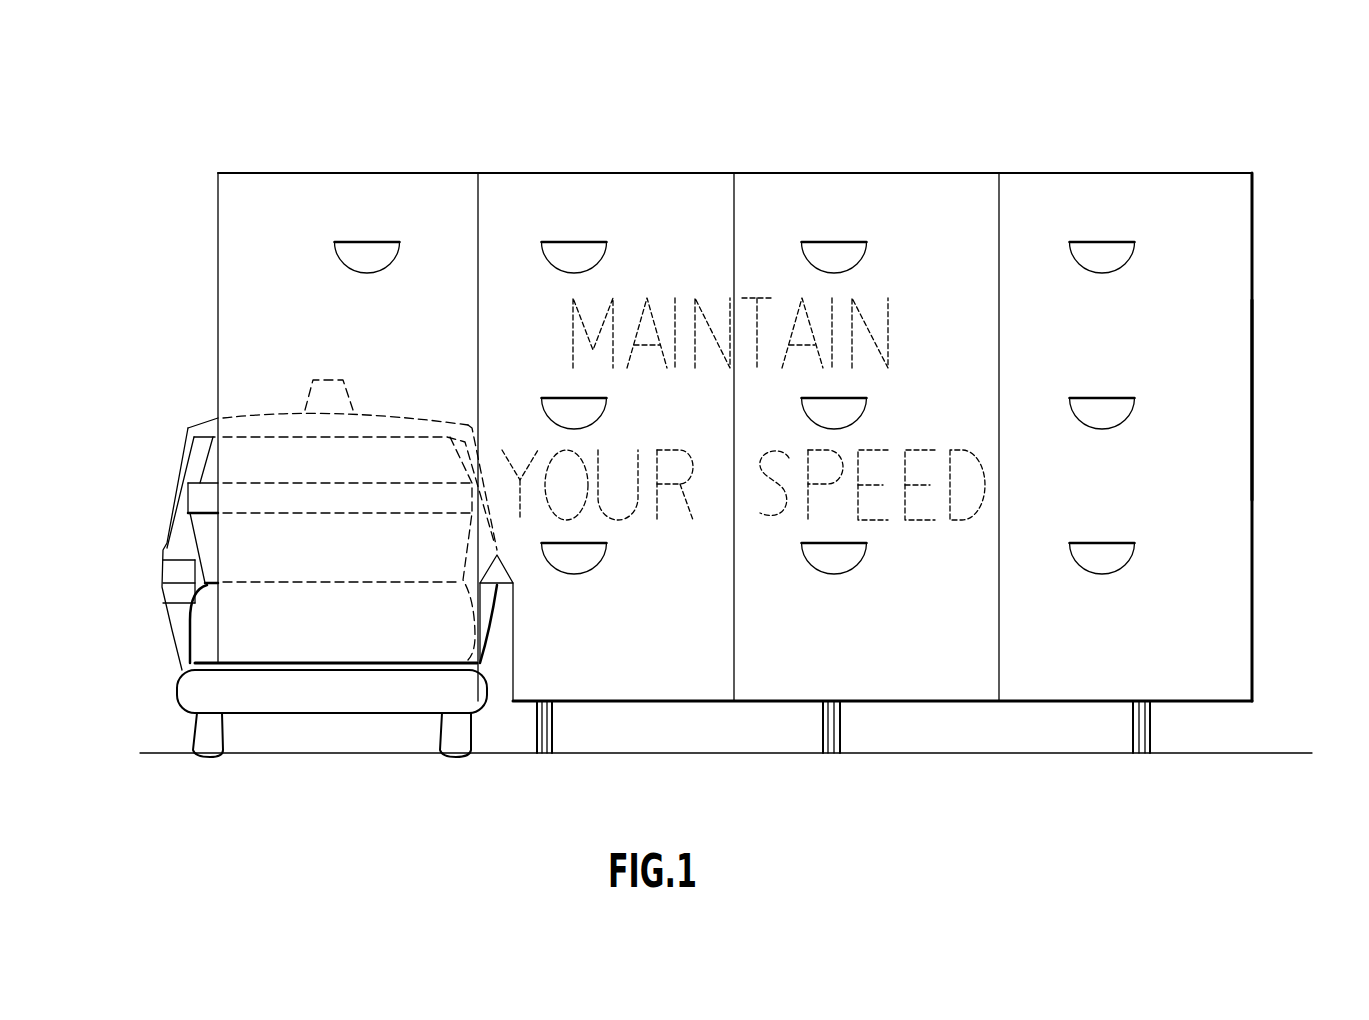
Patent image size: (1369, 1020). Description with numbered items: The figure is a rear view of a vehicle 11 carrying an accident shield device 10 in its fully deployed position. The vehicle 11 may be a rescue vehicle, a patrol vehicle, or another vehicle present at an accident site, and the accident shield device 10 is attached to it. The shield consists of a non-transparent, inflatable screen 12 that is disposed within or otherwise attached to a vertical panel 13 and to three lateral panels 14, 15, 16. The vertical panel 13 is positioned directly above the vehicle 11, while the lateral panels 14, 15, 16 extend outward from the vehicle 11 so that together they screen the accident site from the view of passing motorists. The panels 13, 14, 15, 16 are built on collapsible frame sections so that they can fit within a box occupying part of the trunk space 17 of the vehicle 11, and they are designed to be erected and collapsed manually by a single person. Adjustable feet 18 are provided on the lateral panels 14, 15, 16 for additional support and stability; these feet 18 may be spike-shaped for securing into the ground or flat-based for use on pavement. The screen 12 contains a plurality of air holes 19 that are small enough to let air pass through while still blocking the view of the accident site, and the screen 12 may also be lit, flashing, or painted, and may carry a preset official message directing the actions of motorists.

The accident shield device 10 is at (1290, 183).
The vehicle 11 is at (197, 398).
The inflatable screen 12 is at (1223, 403).
The vertical panel 13 is at (287, 175).
The lateral panel 14 is at (613, 175).
The lateral panel 15 is at (853, 175).
The lateral panel 16 is at (1128, 175).
The trunk space 17 is at (207, 627).
The adjustable feet 18 is at (552, 737).
The air holes 19 is at (1103, 253).